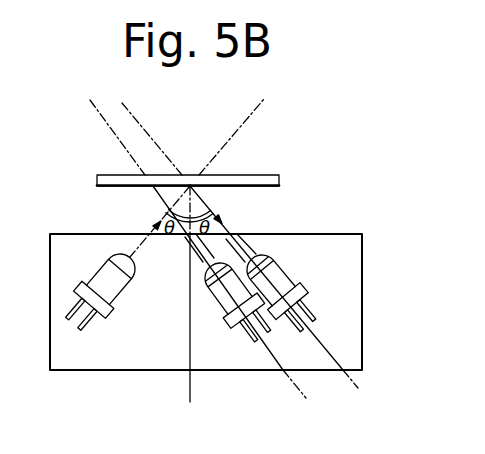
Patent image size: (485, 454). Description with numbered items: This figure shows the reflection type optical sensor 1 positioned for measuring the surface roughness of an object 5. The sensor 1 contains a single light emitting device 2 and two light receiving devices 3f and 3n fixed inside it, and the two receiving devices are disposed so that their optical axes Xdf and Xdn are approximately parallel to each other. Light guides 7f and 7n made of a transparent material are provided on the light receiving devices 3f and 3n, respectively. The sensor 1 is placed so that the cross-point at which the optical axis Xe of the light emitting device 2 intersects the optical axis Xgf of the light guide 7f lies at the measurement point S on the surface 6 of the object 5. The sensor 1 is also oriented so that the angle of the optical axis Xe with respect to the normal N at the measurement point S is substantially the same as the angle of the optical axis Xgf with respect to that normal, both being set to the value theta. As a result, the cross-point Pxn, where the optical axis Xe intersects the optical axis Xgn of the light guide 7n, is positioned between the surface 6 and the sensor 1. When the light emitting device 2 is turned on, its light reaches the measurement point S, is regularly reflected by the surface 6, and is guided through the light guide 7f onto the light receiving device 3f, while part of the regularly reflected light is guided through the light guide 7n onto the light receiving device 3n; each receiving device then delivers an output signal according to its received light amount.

The reflection type optical sensor 1 is at (334, 234).
The light emitting device 2 is at (96, 274).
The light receiving device 3n is at (212, 302).
The light receiving device 3f is at (290, 275).
The object 5 is at (114, 175).
The surface 6 is at (114, 187).
The light guide 7n is at (190, 244).
The light guide 7f is at (244, 241).
The optical axis of the light guide 7n Xgn is at (186, 240).
The optical axis of the light guide 7f Xgf is at (237, 235).
The optical axis of the light emitting device Xe is at (238, 127).
The optical axis of the light receiving device 3n Xdn is at (308, 413).
The optical axis of the light receiving device 3f Xdf is at (364, 403).
The normal N is at (188, 308).
The cross-point Pxn is at (167, 210).
The measurement point S is at (194, 189).